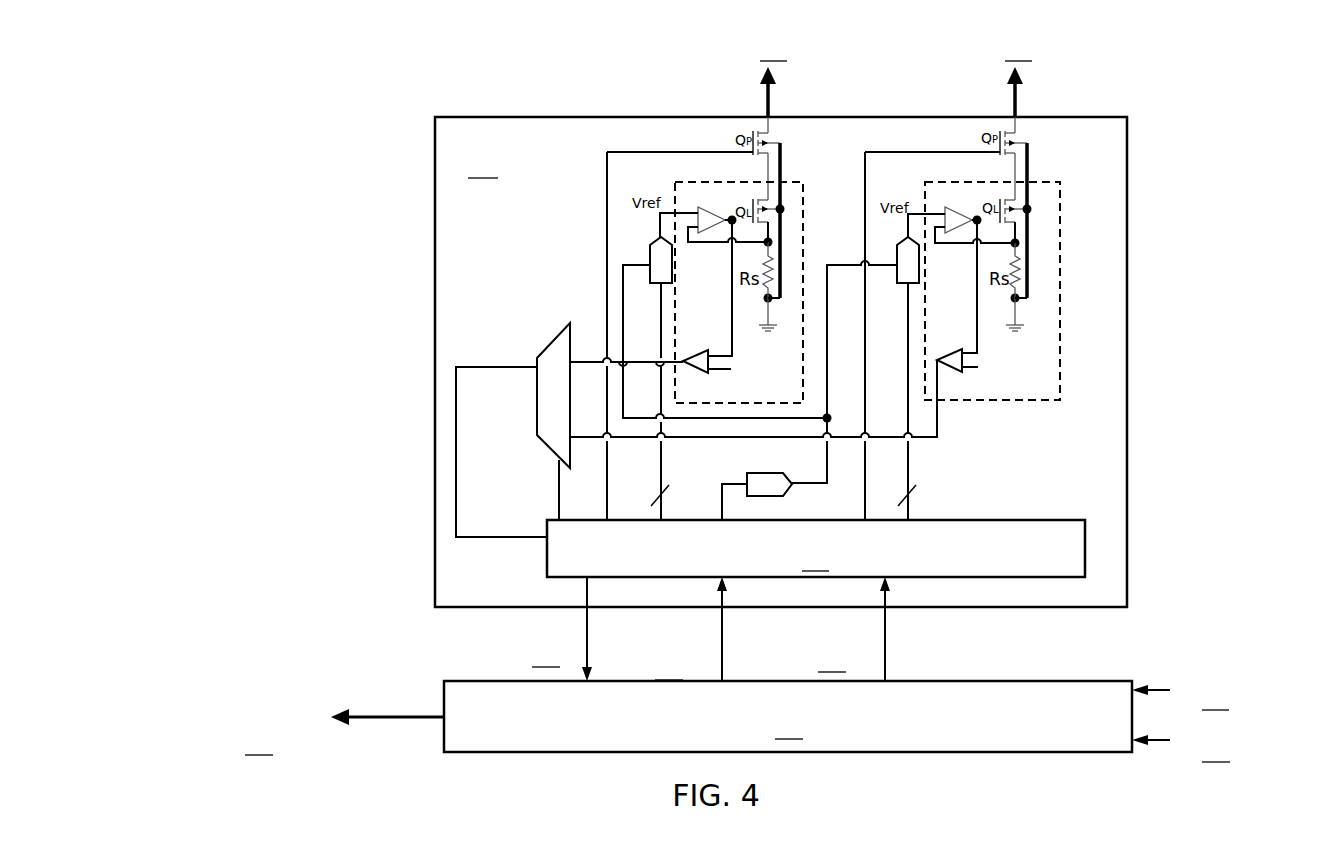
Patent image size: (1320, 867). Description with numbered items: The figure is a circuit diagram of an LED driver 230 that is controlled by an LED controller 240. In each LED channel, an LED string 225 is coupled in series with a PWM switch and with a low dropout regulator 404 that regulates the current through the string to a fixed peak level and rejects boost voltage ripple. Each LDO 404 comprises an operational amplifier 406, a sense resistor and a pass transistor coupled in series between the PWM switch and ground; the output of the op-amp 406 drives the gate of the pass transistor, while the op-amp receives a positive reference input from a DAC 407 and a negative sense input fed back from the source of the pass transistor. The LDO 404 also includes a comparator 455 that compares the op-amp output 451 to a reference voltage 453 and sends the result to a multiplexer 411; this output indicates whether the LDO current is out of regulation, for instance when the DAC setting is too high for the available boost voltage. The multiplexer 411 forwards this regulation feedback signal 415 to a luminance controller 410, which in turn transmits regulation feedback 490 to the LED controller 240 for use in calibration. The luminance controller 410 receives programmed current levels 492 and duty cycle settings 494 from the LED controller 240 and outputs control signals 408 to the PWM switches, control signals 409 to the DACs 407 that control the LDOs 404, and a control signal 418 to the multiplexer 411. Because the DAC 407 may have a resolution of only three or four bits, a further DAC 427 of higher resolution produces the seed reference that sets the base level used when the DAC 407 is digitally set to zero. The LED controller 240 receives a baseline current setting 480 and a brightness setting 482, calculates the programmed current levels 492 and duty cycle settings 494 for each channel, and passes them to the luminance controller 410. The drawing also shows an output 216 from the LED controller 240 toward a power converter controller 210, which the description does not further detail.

The LED driver 230 is at (781, 362).
The LED string 225 is at (895, 68).
The low dropout regulator (LDO) 404 is at (803, 203).
The operational amplifier 406 is at (832, 211).
The digital-to-analog converter 407 is at (657, 283).
The output of op-amp 451 is at (730, 281).
The reference voltage 453 is at (865, 300).
The comparator 455 is at (700, 373).
The multiplexer 411 is at (569, 322).
The regulation feedback signal 415 is at (456, 445).
The control signal 418 is at (557, 477).
The control signals 408 is at (606, 458).
The control signals 409 is at (658, 452).
The DAC 427 is at (757, 487).
The luminance controller 410 is at (816, 548).
The regulation feedback 490 is at (548, 629).
The programmed current levels 492 is at (675, 629).
The duty cycle settings 494 is at (841, 629).
The LED controller 240 is at (788, 716).
The signal to power converter controller 216 is at (380, 715).
The power converter controller 210 is at (259, 722).
The baseline current setting 480 is at (1205, 688).
The brightness setting 482 is at (1193, 742).